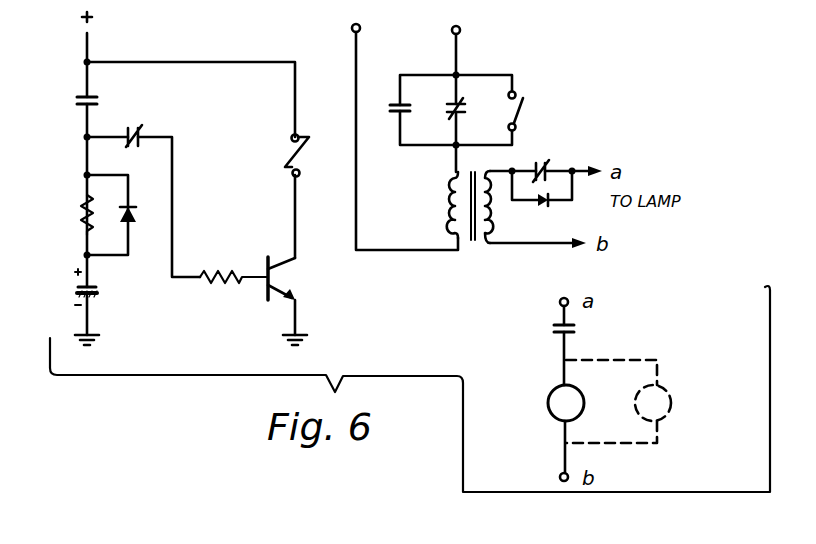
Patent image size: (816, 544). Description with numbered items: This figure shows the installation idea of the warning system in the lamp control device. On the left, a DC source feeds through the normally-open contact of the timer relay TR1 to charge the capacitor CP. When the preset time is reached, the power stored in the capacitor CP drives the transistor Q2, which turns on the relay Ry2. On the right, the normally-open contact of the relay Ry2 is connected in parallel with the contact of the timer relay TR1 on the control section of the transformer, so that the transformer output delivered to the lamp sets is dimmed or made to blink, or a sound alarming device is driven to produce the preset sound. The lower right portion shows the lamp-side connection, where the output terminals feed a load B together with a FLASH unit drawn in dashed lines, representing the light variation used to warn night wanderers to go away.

The timer relay TR1 is at (257, 123).
The relay Ry2 is at (404, 215).
The transistor Q2 is at (272, 267).
The capacitor CP is at (67, 287).
The battery/bulb B is at (548, 409).
The flash unit FLASH is at (647, 401).